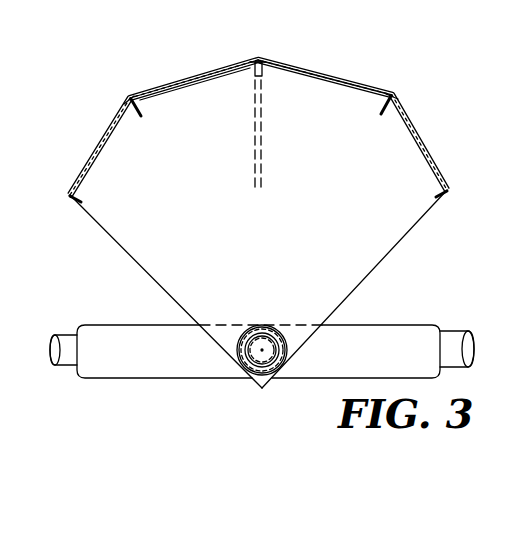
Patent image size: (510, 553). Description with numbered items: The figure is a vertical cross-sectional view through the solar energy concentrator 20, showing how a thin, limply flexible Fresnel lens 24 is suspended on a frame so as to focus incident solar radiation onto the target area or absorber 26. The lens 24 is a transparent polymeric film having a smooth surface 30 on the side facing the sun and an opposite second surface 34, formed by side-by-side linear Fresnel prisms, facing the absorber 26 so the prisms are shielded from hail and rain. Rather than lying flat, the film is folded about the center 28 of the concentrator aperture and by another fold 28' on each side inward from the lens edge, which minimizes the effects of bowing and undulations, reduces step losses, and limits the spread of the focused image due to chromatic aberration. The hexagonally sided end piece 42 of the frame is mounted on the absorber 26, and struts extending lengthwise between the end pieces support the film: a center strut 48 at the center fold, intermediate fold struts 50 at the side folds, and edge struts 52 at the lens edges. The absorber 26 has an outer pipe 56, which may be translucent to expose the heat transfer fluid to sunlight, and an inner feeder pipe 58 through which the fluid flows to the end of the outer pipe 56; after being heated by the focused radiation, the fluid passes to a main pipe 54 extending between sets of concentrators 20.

The solar energy concentrator 20 is at (337, 58).
The linear echelon Fresnel-type lens 24 is at (300, 56).
The target area or absorber 26 is at (263, 318).
The fold line at center 28 is at (253, 36).
The fold on each side 28' is at (272, 78).
The smooth surface 30 is at (177, 106).
The second surface 34 is at (195, 99).
The end piece 42 is at (137, 245).
The center strut 48 is at (265, 70).
The intermediate fold strut 50 is at (143, 114).
The edge strut 52 is at (82, 199).
The main pipe 54 is at (428, 326).
The outer pipe 56 is at (240, 332).
The inner feeder pipe 58 is at (284, 334).